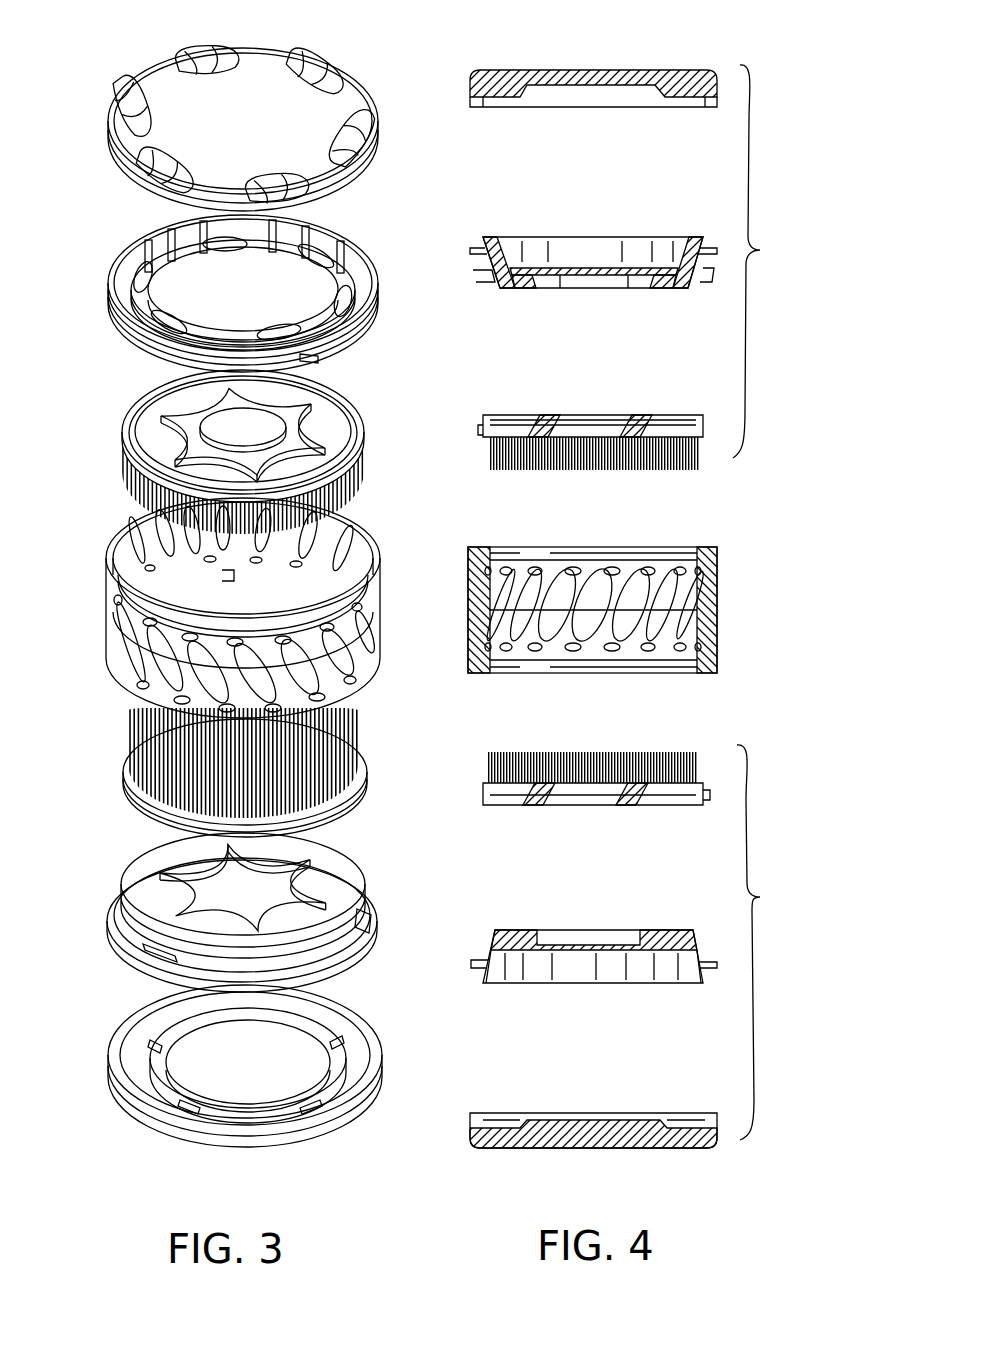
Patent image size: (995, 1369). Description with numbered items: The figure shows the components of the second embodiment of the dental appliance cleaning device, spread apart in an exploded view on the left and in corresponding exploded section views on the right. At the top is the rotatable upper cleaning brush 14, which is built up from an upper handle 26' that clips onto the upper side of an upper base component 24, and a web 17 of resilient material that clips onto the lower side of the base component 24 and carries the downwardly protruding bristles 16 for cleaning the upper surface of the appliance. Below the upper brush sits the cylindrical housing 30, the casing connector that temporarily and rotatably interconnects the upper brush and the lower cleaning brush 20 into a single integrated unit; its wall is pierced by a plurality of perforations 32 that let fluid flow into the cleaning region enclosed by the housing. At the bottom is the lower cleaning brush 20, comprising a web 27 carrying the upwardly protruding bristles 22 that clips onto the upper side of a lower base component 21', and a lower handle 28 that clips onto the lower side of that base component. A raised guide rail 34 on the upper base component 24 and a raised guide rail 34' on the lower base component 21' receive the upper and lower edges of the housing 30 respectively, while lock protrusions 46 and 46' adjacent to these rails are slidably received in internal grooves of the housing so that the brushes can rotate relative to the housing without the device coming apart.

In FIG. 3, the upper handle 26' is at (239, 117).
In FIG. 4, the upper handle 26' is at (593, 63).
In FIG. 3, the raised guide rail 34 is at (284, 293).
In FIG. 4, the raised guide rail 34 is at (576, 262).
In FIG. 3, the upper base component 24 is at (374, 297).
In FIG. 4, the upper base component 24 is at (488, 275).
In FIG. 3, the lock protrusions 46 is at (339, 362).
In FIG. 4, the lock protrusions 46 is at (716, 290).
In FIG. 3, the web 17 is at (366, 410).
In FIG. 3, the downwardly protruding bristles 16 is at (350, 475).
In FIG. 4, the downwardly protruding bristles 16 is at (665, 462).
In FIG. 3, the cylindrical housing 30 is at (82, 592).
In FIG. 4, the cylindrical housing 30 is at (738, 602).
In FIG. 3, the perforations 32 is at (350, 666).
In FIG. 4, the perforations 32 is at (630, 631).
In FIG. 3, the upwardly protruding bristles 22 is at (130, 728).
In FIG. 4, the upwardly protruding bristles 22 is at (504, 752).
In FIG. 3, the web 27 is at (366, 780).
In FIG. 3, the raised guide rail 34' is at (202, 925).
In FIG. 3, the lock protrusions 46' is at (256, 934).
In FIG. 4, the lock protrusions 46' is at (582, 934).
In FIG. 3, the lower base component 21' is at (284, 901).
In FIG. 4, the lower base component 21' is at (576, 961).
In FIG. 3, the lower handle 28 is at (130, 1105).
In FIG. 4, the lower handle 28 is at (490, 1148).
In FIG. 4, the rotatable upper cleaning brush 14 is at (772, 261).
In FIG. 4, the lower cleaning brush 20 is at (773, 942).